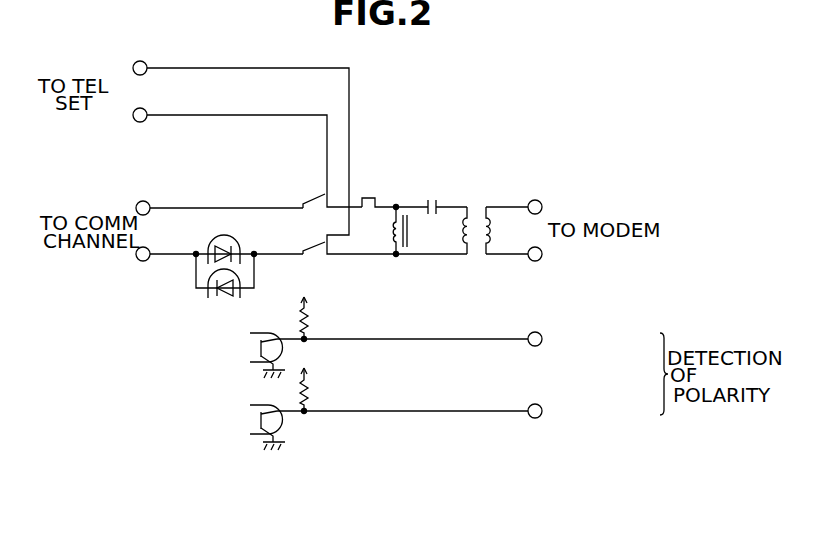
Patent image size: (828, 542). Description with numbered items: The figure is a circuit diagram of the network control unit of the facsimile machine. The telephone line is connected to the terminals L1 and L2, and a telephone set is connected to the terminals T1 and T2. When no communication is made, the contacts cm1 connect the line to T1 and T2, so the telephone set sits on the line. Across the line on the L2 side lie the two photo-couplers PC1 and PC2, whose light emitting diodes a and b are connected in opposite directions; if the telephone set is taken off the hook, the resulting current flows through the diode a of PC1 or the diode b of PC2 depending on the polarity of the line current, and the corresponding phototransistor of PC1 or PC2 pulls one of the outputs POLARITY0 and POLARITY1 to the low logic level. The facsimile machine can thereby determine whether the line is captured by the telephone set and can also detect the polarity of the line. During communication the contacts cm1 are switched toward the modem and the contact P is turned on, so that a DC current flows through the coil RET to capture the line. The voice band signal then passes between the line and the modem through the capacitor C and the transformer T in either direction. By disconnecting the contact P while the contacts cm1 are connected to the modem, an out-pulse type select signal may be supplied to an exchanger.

The telephone set terminal T1 is at (251, 155).
The telephone set terminal T2 is at (234, 155).
The line terminal L1 is at (206, 201).
The line terminal L2 is at (206, 260).
The contacts cm1 is at (318, 240).
The contact P is at (379, 191).
The light emitting diode of photo-coupler PC1 a is at (231, 246).
The light emitting diode of photo-coupler PC2 b is at (226, 276).
The photo-coupler PC1 is at (246, 293).
The photo-coupler PC2 is at (240, 352).
The coil RET is at (405, 247).
The capacitor C is at (431, 196).
The transformer T is at (502, 242).
The polarity detection output POLARITY0 is at (465, 324).
The polarity detection output POLARITY1 is at (465, 396).